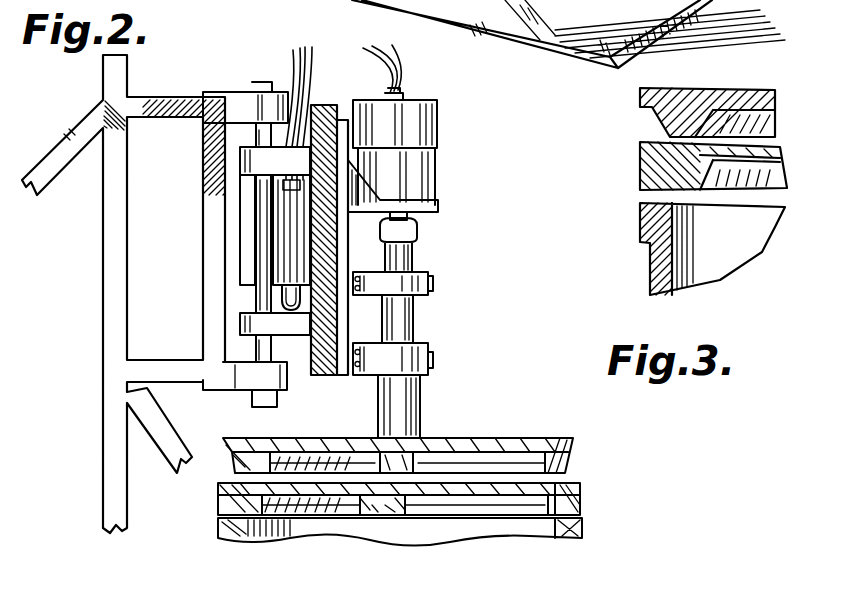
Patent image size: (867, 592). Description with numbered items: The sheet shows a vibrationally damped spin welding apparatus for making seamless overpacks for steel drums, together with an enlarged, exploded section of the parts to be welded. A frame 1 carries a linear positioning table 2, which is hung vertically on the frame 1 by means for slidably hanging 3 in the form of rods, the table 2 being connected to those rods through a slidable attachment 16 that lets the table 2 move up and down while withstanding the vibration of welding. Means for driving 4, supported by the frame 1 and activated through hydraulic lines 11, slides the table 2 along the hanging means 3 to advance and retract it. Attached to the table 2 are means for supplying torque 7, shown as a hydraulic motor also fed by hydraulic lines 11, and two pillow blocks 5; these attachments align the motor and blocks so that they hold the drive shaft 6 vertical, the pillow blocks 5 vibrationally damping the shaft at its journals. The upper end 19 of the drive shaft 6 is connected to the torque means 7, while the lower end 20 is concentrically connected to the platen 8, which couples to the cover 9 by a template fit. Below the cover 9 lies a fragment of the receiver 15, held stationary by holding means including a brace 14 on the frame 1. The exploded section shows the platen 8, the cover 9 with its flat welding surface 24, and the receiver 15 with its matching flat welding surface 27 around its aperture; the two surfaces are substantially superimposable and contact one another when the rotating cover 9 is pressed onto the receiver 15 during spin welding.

In FIG. 2, the frame 1 is at (108, 363).
In FIG. 2, the linear positioning table 2 is at (326, 106).
In FIG. 2, the means for slidably hanging 3 is at (252, 137).
In FIG. 2, the means for driving 4 is at (247, 235).
In FIG. 2, the pillow block 5 is at (430, 278).
In FIG. 2, the drive shaft 6 is at (413, 322).
In FIG. 2, the means for supplying torque 7 is at (427, 168).
In FIG. 2, the platen 8 is at (574, 442).
In FIG. 2, the cover 9 is at (579, 497).
In FIG. 2, the hydraulic lines 11 is at (290, 70).
In FIG. 3, the brace 14 is at (728, 0).
In FIG. 2, the receiver 15 is at (582, 525).
In FIG. 2, the slidable attachment 16 is at (243, 325).
In FIG. 2, the upper end 19 is at (413, 250).
In FIG. 2, the lower end 20 is at (416, 413).
In FIG. 3, the welding surface 24 is at (640, 192).
In FIG. 3, the welding surface 27 is at (645, 203).